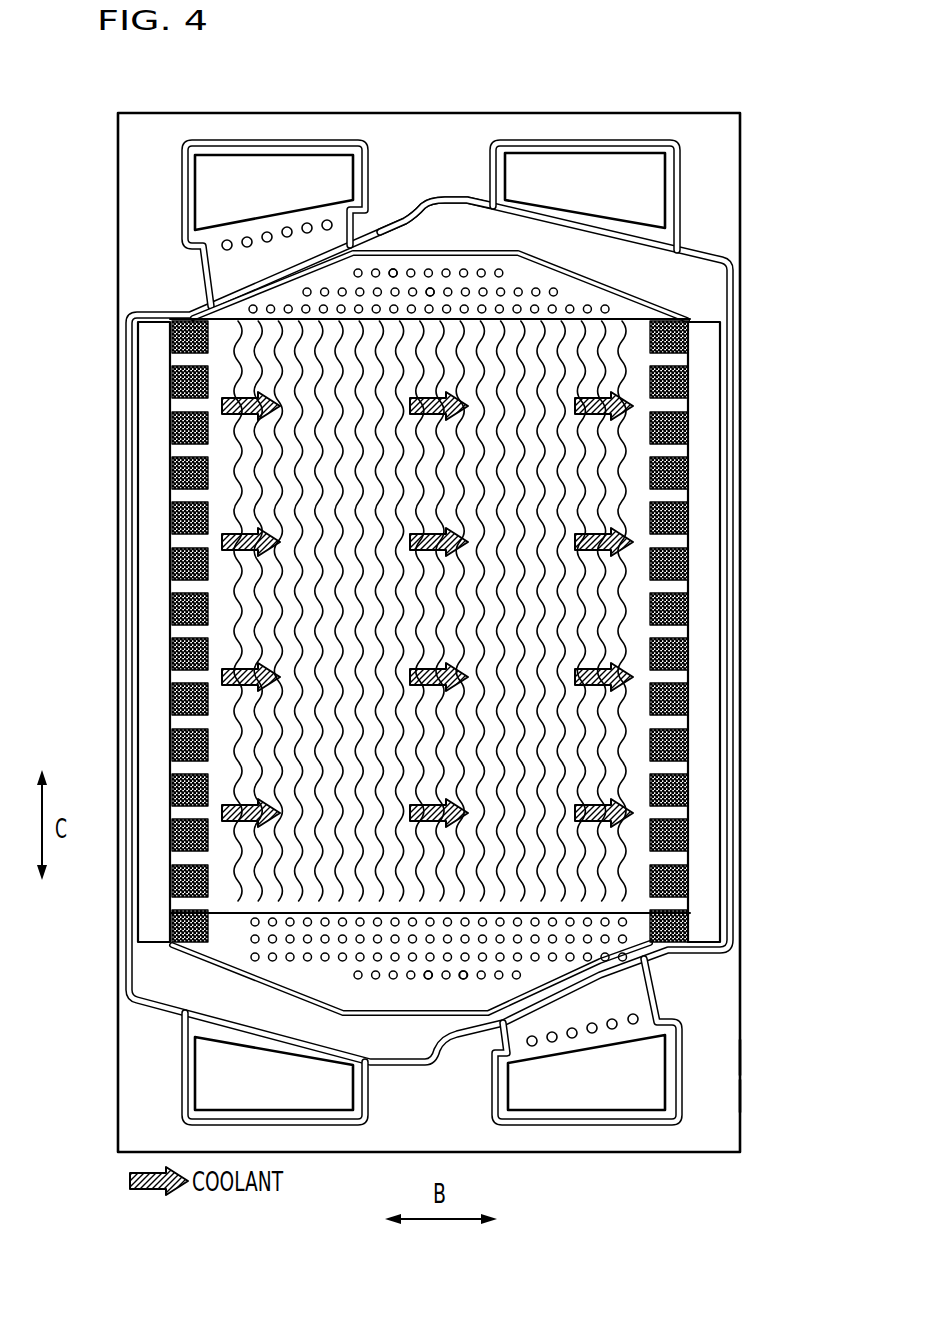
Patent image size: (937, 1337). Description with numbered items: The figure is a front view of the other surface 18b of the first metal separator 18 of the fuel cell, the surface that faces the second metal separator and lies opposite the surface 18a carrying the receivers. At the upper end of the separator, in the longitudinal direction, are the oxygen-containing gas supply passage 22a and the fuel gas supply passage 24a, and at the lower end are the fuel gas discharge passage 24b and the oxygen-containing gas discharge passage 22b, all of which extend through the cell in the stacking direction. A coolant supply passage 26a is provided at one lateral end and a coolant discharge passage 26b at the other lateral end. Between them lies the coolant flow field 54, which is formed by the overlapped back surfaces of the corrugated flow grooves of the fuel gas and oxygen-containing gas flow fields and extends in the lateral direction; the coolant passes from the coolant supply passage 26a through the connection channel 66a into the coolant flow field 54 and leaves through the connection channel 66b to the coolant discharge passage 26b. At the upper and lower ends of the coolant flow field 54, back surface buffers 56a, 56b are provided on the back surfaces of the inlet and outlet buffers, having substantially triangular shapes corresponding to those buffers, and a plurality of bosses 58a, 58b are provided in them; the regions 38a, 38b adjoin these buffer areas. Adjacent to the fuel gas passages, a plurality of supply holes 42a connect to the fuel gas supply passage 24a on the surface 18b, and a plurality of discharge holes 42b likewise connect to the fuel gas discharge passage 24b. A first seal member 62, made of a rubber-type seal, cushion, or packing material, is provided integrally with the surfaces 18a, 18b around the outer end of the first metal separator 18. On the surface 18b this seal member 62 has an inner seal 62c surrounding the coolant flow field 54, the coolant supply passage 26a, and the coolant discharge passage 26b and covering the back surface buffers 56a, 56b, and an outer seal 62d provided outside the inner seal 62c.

The first metal separator 18 is at (658, 55).
The surface of the first metal separator 18a is at (705, 1095).
The surface of the first metal separator 18b is at (705, 1058).
The oxygen-containing gas supply passage 22a is at (585, 190).
The oxygen-containing gas discharge passage 22b is at (275, 1067).
The fuel gas supply passage 24a is at (275, 224).
The fuel gas discharge passage 24b is at (587, 1040).
The coolant supply passage 26a is at (157, 583).
The coolant discharge passage 26b is at (700, 563).
The inlet buffer 38a is at (580, 317).
The outlet buffer 38b is at (282, 948).
The supply holes 42a is at (325, 219).
The discharge holes 42b is at (570, 1039).
The coolant flow field 54 is at (596, 607).
The back surface buffer 56a is at (454, 285).
The back surface buffer 56b is at (393, 985).
The bosses 58a is at (431, 288).
The bosses 58b is at (462, 980).
The first seal member 62 is at (739, 705).
The inner seal 62c is at (384, 229).
The outer seal 62d is at (543, 140).
The connection channel 66a is at (172, 903).
The connection channel 66b is at (684, 400).